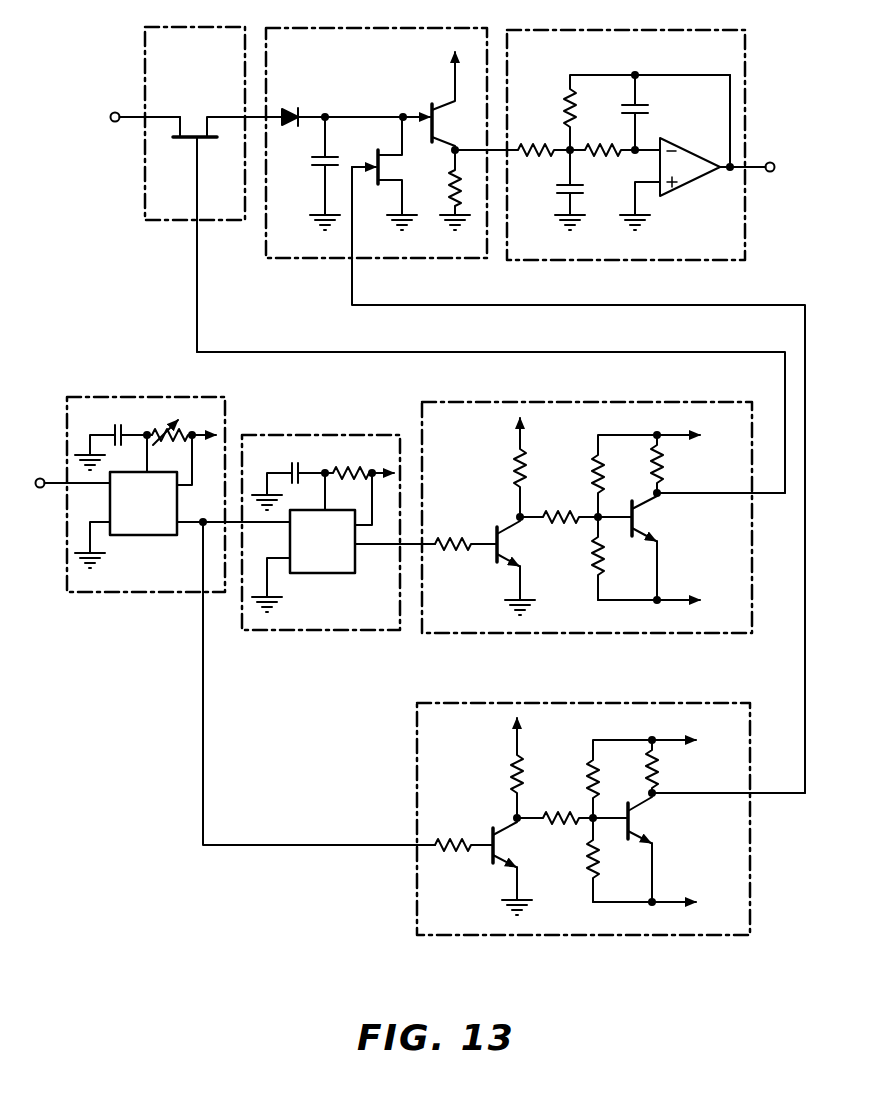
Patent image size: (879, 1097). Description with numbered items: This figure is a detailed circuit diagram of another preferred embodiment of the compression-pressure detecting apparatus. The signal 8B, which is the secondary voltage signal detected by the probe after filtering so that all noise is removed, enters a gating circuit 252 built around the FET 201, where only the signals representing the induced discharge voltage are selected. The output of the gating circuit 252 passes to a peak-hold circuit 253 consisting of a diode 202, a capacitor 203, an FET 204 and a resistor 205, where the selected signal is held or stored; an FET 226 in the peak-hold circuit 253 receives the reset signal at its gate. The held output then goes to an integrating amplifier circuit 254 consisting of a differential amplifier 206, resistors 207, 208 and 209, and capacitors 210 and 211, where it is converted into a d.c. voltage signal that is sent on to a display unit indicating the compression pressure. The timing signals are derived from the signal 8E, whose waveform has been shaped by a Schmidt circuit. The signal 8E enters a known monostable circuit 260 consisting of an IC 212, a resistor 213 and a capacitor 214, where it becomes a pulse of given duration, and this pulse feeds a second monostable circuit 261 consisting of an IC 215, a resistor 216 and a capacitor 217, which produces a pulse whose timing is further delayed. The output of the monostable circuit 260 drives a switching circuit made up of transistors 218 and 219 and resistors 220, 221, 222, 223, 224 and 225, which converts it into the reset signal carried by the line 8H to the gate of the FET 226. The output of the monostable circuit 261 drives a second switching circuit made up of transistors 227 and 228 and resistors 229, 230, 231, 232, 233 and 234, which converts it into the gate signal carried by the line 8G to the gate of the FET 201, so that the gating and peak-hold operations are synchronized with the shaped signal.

The signal 8B is at (108, 115).
The signal 8E is at (42, 478).
The signal line 8G is at (255, 352).
The signal line 8H is at (403, 307).
The FET 201 is at (197, 127).
The diode 202 is at (286, 111).
The capacitor 203 is at (315, 160).
The FET 204 is at (440, 101).
The resistor 205 is at (452, 193).
The differential amplifier 206 is at (694, 186).
The resistor 207 is at (552, 144).
The resistor 208 is at (577, 114).
The resistor 209 is at (602, 158).
The capacitor 210 is at (556, 189).
The capacitor 211 is at (648, 116).
The IC 212 is at (140, 535).
The resistor 213 is at (166, 420).
The capacitor 214 is at (110, 432).
The IC 215 is at (327, 573).
The resistor 216 is at (343, 472).
The capacitor 217 is at (291, 467).
The transistor 218 is at (505, 862).
The transistor 219 is at (646, 831).
The resistor 220 is at (450, 841).
The resistor 221 is at (512, 780).
The resistor 222 is at (548, 835).
The resistor 223 is at (588, 779).
The resistor 224 is at (660, 770).
The resistor 225 is at (600, 860).
The FET 226 is at (383, 176).
The transistor 227 is at (515, 555).
The transistor 228 is at (645, 529).
The resistor 229 is at (458, 540).
The resistor 230 is at (513, 469).
The resistor 231 is at (557, 513).
The resistor 232 is at (592, 467).
The resistor 233 is at (660, 464).
The resistor 234 is at (596, 572).
The gating circuit 252 is at (192, 27).
The peak-hold circuit 253 is at (388, 28).
The integrating amplifier circuit 254 is at (658, 30).
The monostable circuit 260 is at (150, 397).
The monostable circuit 261 is at (325, 435).